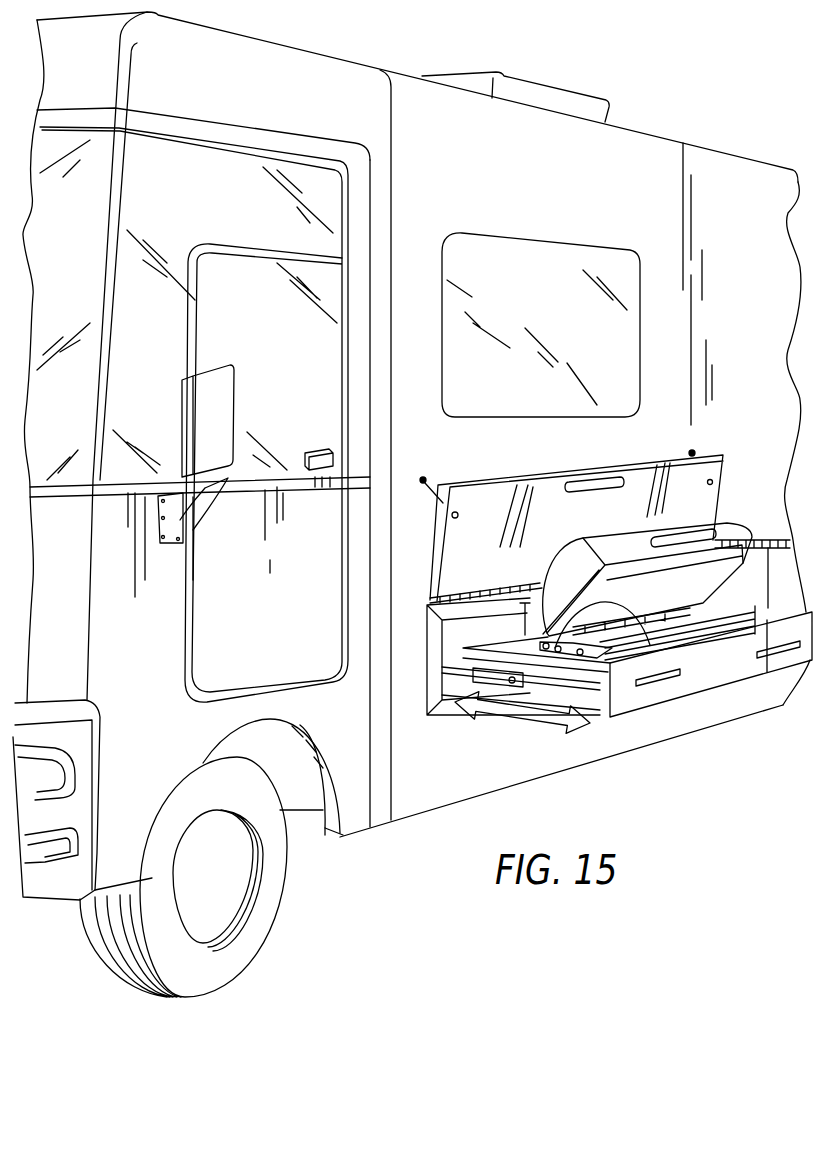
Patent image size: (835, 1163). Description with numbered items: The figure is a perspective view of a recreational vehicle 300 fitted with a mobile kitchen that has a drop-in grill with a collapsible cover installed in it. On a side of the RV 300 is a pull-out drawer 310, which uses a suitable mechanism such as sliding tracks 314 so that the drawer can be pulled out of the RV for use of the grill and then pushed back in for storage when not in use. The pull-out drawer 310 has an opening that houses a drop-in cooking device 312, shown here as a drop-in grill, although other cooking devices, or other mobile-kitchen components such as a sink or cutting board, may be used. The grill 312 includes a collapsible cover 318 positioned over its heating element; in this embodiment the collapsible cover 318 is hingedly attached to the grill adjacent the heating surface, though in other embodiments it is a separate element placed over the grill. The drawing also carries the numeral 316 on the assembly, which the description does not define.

The recreational vehicle 300 is at (337, 43).
The pull-out drawer 310 is at (495, 647).
The drop-in cooking device 312 is at (605, 608).
The sliding tracks 314 is at (463, 673).
The back panel 316 is at (483, 623).
The collapsible cover 318 is at (738, 516).